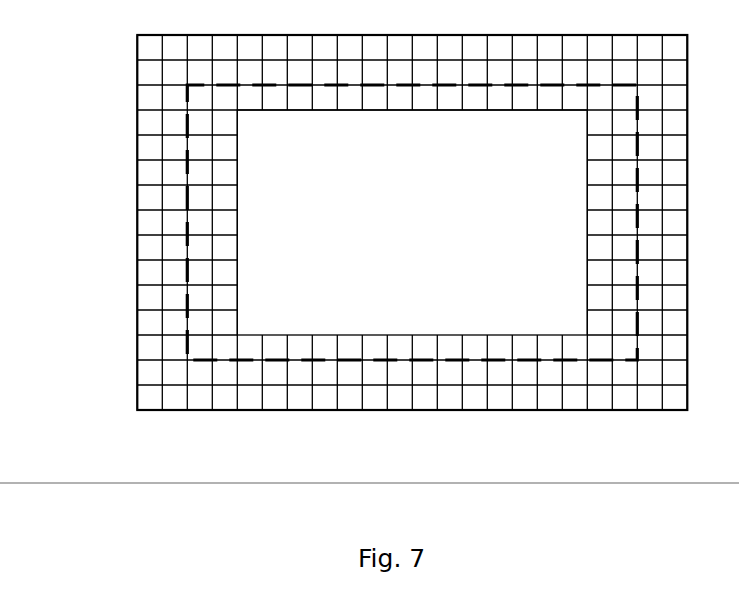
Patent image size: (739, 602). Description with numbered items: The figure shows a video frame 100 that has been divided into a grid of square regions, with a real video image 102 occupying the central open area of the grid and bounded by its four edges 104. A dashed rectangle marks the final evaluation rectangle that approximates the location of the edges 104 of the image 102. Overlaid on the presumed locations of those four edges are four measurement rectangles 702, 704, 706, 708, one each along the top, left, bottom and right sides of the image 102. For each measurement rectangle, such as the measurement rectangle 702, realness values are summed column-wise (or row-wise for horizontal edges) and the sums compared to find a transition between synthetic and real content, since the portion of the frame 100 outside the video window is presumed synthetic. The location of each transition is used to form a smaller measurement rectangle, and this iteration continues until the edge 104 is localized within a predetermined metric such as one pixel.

The video frame 100 is at (359, 246).
The image 102 is at (412, 222).
The edges 104 is at (187, 241).
The measurement rectangle 702 is at (413, 110).
The measurement rectangle 704 is at (237, 220).
The measurement rectangle 706 is at (410, 335).
The measurement rectangle 708 is at (587, 223).